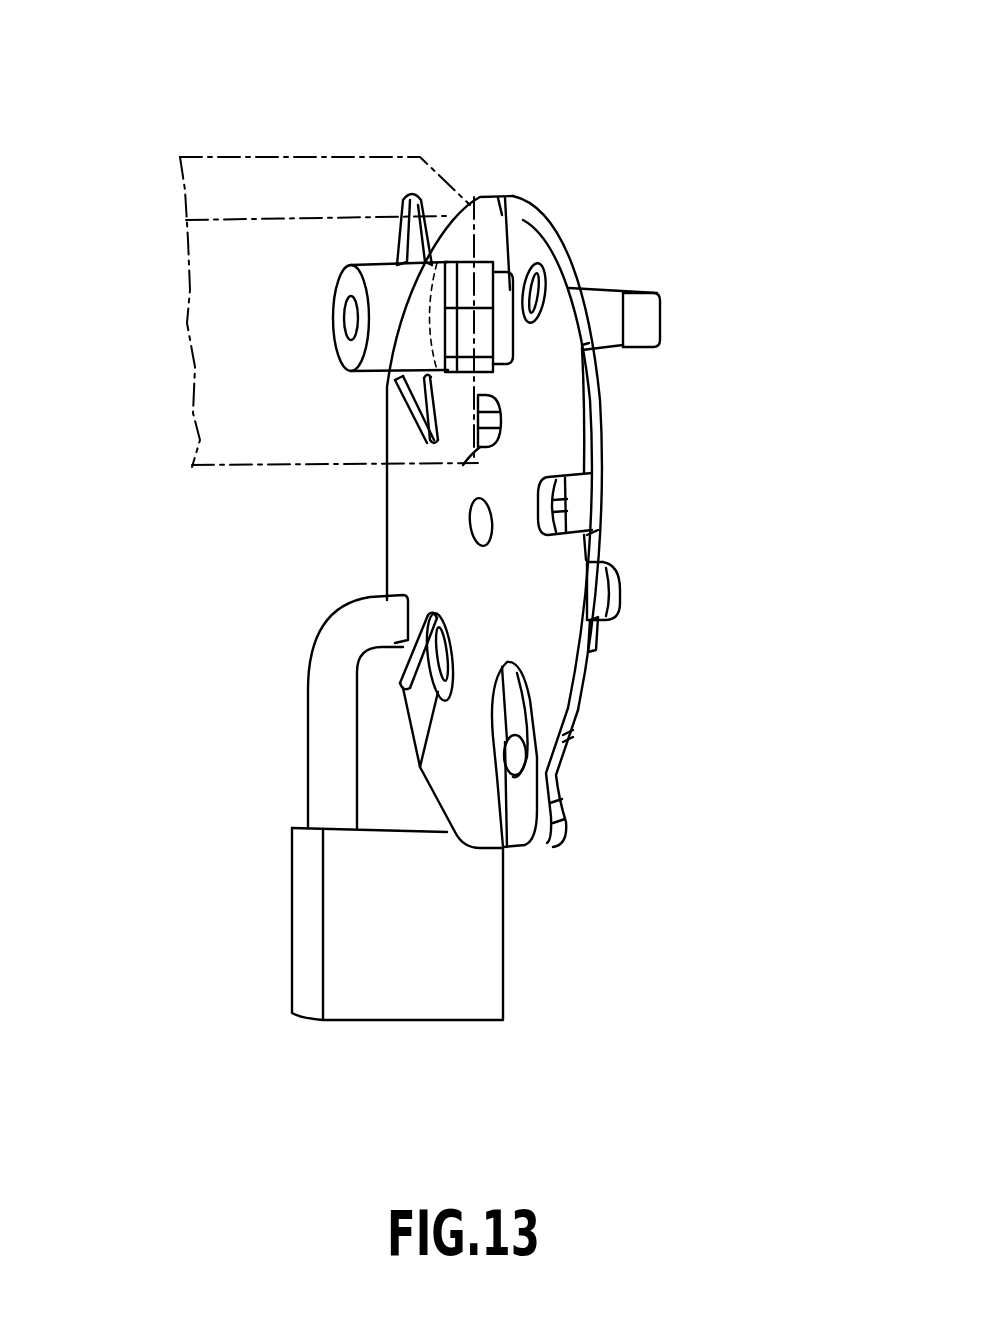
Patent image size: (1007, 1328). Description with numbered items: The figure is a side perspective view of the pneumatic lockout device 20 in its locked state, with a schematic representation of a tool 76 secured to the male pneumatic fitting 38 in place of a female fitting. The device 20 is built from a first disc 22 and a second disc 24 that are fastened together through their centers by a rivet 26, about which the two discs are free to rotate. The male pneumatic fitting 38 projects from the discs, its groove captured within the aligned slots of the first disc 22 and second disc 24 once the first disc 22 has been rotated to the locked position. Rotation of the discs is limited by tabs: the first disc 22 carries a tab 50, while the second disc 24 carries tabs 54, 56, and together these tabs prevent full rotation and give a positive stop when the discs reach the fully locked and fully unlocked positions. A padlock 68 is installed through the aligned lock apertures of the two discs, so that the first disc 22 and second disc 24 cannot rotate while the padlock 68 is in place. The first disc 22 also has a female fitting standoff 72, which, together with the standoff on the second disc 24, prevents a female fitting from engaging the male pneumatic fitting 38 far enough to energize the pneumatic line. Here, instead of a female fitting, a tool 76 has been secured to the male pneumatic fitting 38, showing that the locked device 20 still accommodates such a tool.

The pneumatic lockout device 20 is at (655, 391).
The first disc 22 is at (398, 492).
The second disc 24 is at (605, 492).
The rivet 26 is at (470, 535).
The male pneumatic fitting 38 is at (600, 288).
The tab 50 is at (557, 847).
The tab 54 is at (616, 616).
The tab 56 is at (403, 203).
The padlock 68 is at (318, 760).
The female fitting standoff 72 is at (477, 503).
The tool 76 is at (207, 362).